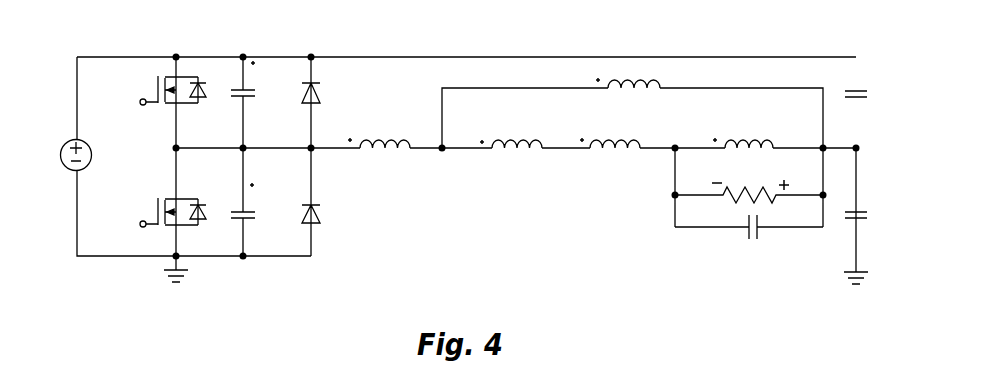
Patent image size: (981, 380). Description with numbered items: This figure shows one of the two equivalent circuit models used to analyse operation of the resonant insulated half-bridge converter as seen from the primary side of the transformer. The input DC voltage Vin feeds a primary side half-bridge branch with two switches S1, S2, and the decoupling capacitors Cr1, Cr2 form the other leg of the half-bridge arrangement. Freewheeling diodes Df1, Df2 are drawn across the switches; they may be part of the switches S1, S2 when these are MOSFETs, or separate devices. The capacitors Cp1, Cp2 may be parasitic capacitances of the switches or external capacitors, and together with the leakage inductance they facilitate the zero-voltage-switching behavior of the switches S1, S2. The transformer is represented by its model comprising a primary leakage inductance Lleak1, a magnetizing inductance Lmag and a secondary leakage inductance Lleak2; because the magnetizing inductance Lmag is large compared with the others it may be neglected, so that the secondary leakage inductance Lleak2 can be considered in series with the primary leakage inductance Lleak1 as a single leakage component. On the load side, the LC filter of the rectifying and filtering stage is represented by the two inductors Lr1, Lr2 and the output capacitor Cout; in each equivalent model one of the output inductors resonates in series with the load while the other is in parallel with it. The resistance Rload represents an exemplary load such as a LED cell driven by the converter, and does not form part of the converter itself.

The input DC voltage Vin is at (60, 145).
The switch S1 is at (166, 90).
The switch S2 is at (166, 195).
The capacitor Cp1 is at (264, 102).
The capacitor Cp2 is at (264, 202).
The freewheeling diode Df1 is at (333, 102).
The freewheeling diode Df2 is at (333, 202).
The primary leakage inductance Lleak1 is at (382, 155).
The secondary leakage inductance Lleak2 is at (515, 155).
The magnetizing inductance Lmag is at (632, 103).
The inductor Lr1 is at (615, 135).
The inductor Lr2 is at (751, 135).
The decoupling capacitor Cr1 is at (876, 101).
The decoupling capacitor Cr2 is at (876, 222).
The resistance value of a load Rload is at (749, 187).
The output capacitor Cout is at (749, 237).